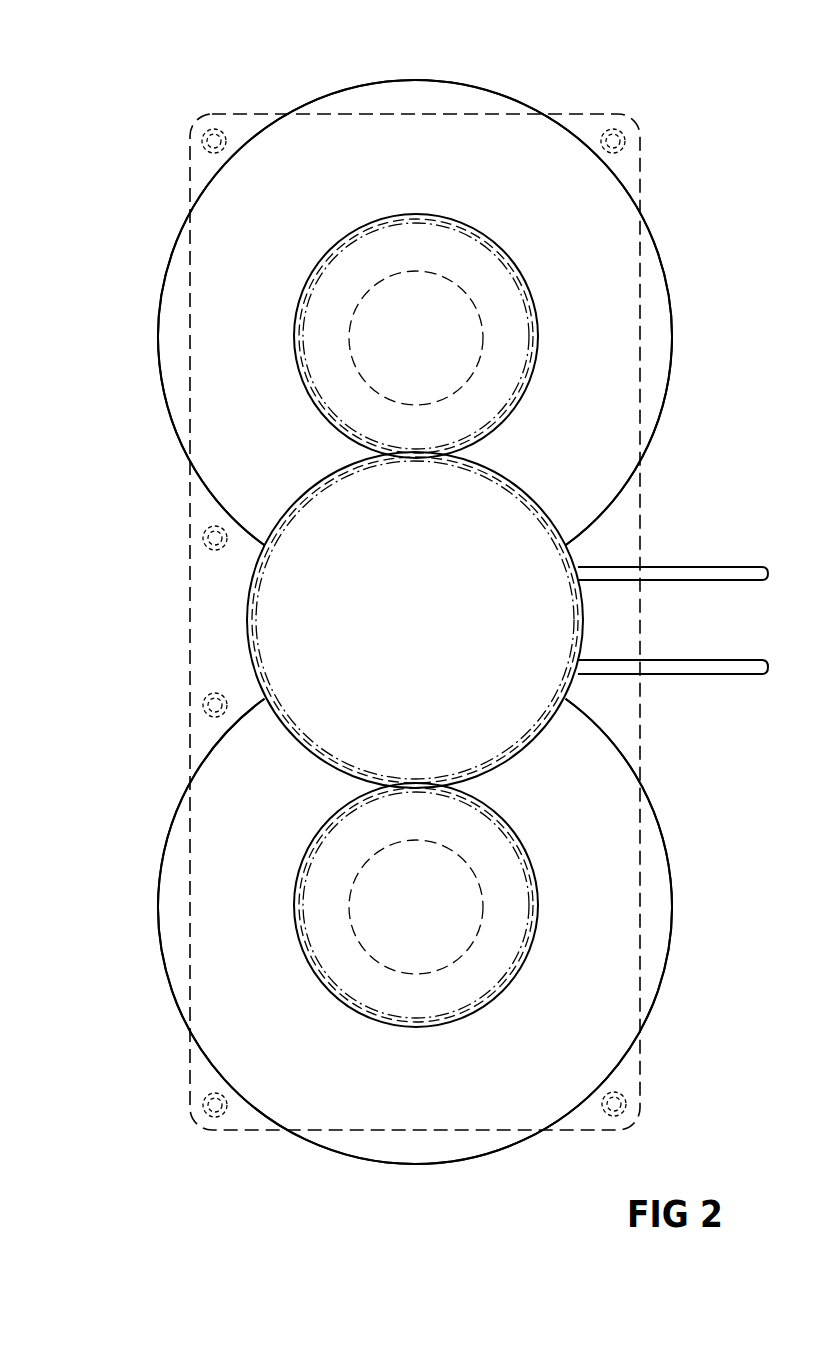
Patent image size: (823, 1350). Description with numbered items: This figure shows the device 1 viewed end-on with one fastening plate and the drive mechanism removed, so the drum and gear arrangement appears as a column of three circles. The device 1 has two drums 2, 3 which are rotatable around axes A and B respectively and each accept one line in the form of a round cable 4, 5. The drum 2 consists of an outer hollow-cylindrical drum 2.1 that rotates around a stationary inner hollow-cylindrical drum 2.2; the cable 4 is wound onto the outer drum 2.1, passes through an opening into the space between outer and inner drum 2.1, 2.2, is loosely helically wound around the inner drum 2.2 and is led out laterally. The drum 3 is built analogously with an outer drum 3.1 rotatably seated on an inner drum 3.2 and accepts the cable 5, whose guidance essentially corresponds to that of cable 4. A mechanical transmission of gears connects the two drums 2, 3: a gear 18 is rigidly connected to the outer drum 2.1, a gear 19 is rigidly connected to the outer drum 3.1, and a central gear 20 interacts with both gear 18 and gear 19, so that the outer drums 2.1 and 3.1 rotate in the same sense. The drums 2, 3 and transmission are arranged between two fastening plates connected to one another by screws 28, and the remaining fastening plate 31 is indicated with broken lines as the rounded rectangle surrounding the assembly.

The device 1 is at (145, 245).
The drum 2 is at (499, 96).
The outer drum 2.1 is at (369, 102).
The inner drum 2.2 is at (475, 305).
The drum 3 is at (669, 958).
The outer drum 3.1 is at (605, 1040).
The inner drum 3.2 is at (477, 935).
The cable 4 is at (716, 572).
The cable 5 is at (705, 673).
The gear 18 is at (467, 256).
The gear 19 is at (498, 860).
The gear 20 is at (280, 606).
The screws 28 is at (206, 141).
The fastening plate 31 is at (251, 113).